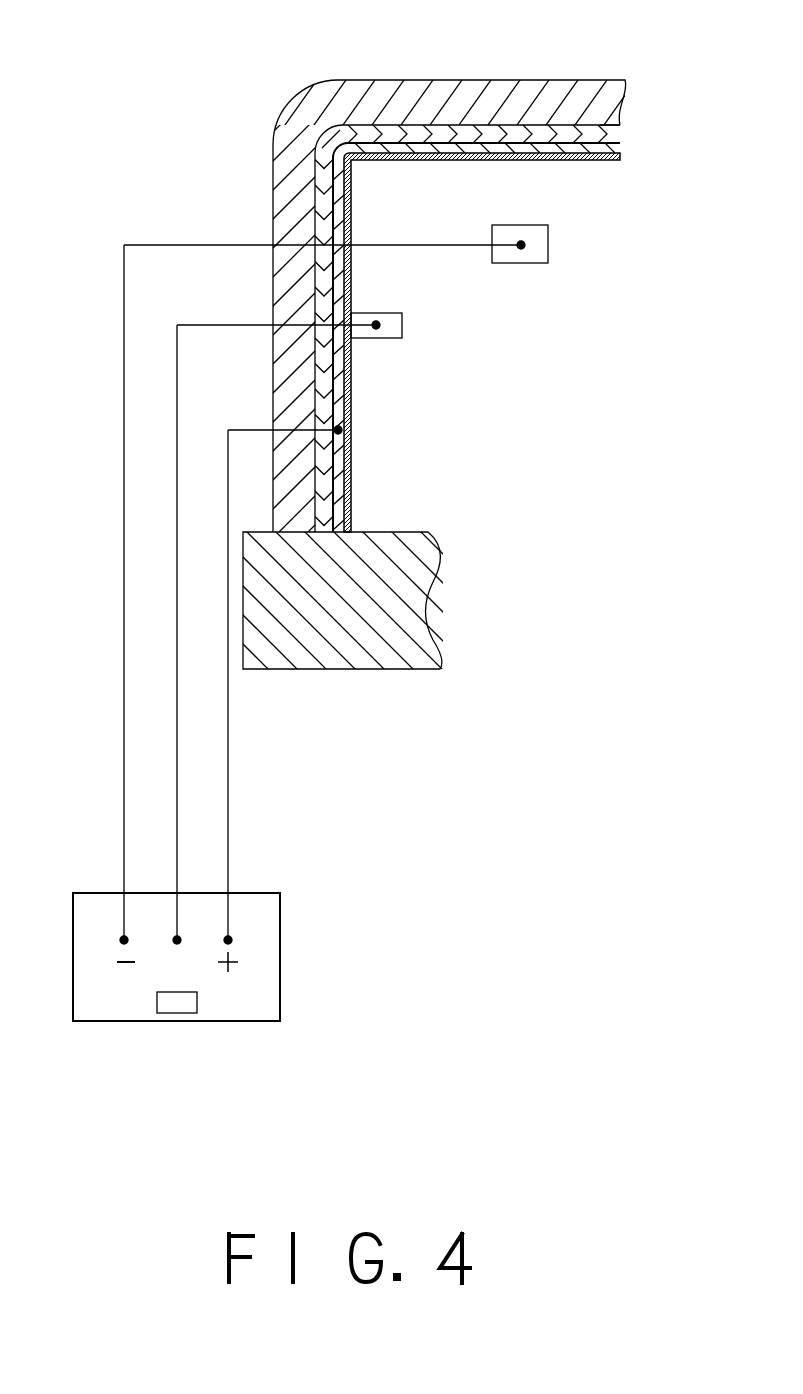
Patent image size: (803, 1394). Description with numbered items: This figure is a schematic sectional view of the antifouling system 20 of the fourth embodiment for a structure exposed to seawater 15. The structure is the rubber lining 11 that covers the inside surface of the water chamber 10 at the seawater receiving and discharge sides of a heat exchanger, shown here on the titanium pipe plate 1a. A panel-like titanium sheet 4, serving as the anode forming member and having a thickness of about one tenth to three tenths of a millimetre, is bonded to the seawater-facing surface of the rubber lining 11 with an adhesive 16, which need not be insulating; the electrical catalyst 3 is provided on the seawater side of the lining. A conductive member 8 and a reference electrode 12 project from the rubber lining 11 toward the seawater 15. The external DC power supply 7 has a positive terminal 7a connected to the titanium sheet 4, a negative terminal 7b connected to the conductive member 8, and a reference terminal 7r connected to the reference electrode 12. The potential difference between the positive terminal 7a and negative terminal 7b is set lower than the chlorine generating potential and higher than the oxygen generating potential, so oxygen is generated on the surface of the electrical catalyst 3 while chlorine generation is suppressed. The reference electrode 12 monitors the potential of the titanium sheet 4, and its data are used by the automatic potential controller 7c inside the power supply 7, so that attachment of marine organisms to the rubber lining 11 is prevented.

The titanium pipe plate 1a is at (403, 617).
The electrical catalyst 3 is at (497, 157).
The panel-like titanium sheet 4 is at (607, 147).
The external DC power supply 7 is at (280, 987).
The positive terminal 7a is at (228, 940).
The negative terminal 7b is at (124, 940).
The reference terminal 7r is at (177, 940).
The automatic potential controller 7c is at (170, 1005).
The conductive member 8 is at (548, 245).
The water chamber 10 is at (488, 93).
The rubber lining 11 is at (383, 135).
The reference electrode 12 is at (402, 329).
The seawater 15 is at (688, 335).
The adhesive 16 is at (580, 120).
The antifouling system 20 is at (229, 231).